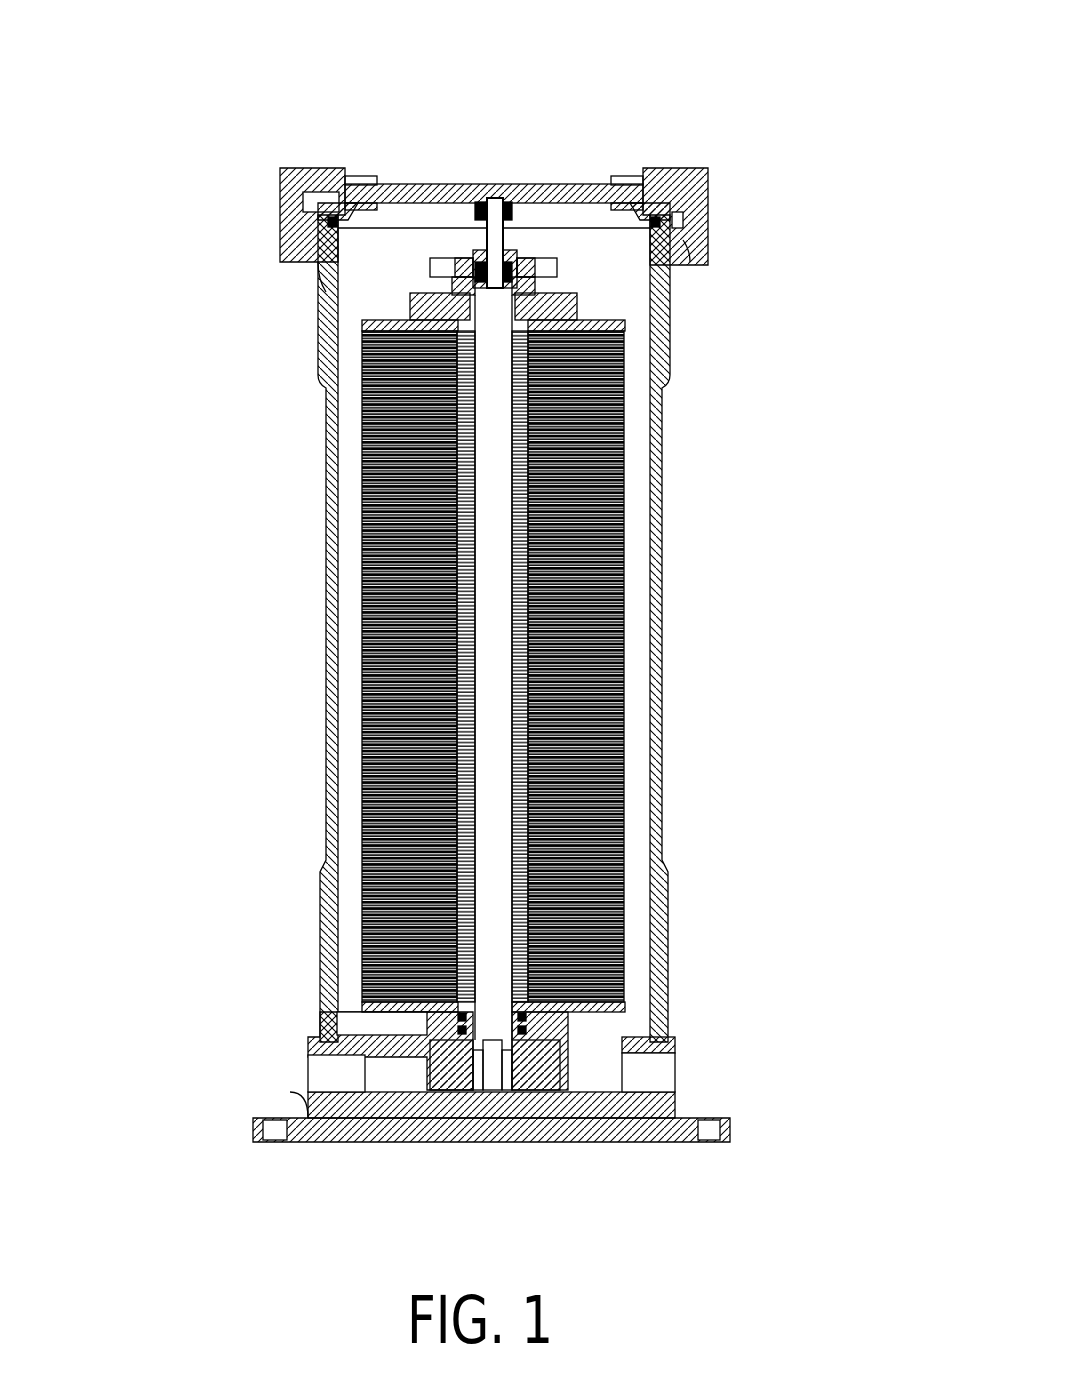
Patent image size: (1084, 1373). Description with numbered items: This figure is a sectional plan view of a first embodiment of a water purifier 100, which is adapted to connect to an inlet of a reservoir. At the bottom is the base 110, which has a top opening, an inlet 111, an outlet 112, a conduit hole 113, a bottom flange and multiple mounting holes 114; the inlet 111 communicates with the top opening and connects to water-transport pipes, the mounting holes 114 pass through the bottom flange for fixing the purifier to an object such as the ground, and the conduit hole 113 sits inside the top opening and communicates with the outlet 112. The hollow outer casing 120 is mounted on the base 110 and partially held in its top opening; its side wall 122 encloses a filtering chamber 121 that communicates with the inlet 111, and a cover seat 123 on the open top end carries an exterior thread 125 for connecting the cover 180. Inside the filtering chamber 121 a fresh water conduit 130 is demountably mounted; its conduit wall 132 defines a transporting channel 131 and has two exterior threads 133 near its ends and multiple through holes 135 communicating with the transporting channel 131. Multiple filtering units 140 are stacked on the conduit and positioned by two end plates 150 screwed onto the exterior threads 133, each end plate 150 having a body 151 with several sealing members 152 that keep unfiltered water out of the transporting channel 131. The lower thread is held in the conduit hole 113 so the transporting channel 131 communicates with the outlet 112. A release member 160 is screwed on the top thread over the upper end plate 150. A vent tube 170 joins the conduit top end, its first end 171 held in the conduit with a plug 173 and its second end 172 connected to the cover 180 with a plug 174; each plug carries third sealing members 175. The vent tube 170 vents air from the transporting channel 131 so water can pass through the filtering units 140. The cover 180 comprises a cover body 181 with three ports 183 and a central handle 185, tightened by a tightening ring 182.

The water purifier 100 is at (272, 378).
The base 110 is at (483, 1089).
The inlet 111 is at (667, 1072).
The outlet 112 is at (320, 1077).
The conduit hole 113 is at (528, 1030).
The mounting holes 114 is at (710, 1138).
The outer casing 120 is at (516, 628).
The filtering chamber 121 is at (347, 712).
The side wall 122 is at (660, 530).
The cover seat 123 is at (320, 272).
The exterior thread 125 is at (675, 255).
The fresh water conduit 130 is at (495, 666).
The transporting channel 131 is at (497, 626).
The conduit wall 132 is at (375, 578).
The exterior threads 133 is at (555, 1025).
The through holes 135 is at (452, 418).
The filtering units 140 is at (633, 452).
The end plates 150 is at (475, 690).
The body 151 is at (388, 1013).
The sealing members 152 is at (458, 1040).
The release member 160 is at (593, 180).
The vent tube 170 is at (511, 548).
The first end 171 is at (560, 285).
The second end 172 is at (510, 205).
The plug 173 is at (404, 180).
The plug 174 is at (465, 180).
The third sealing members 175 is at (318, 265).
The cover 180 is at (474, 163).
The cover body 181 is at (683, 171).
The tightening ring 182 is at (313, 198).
The ports 183 is at (370, 180).
The handle 185 is at (483, 180).